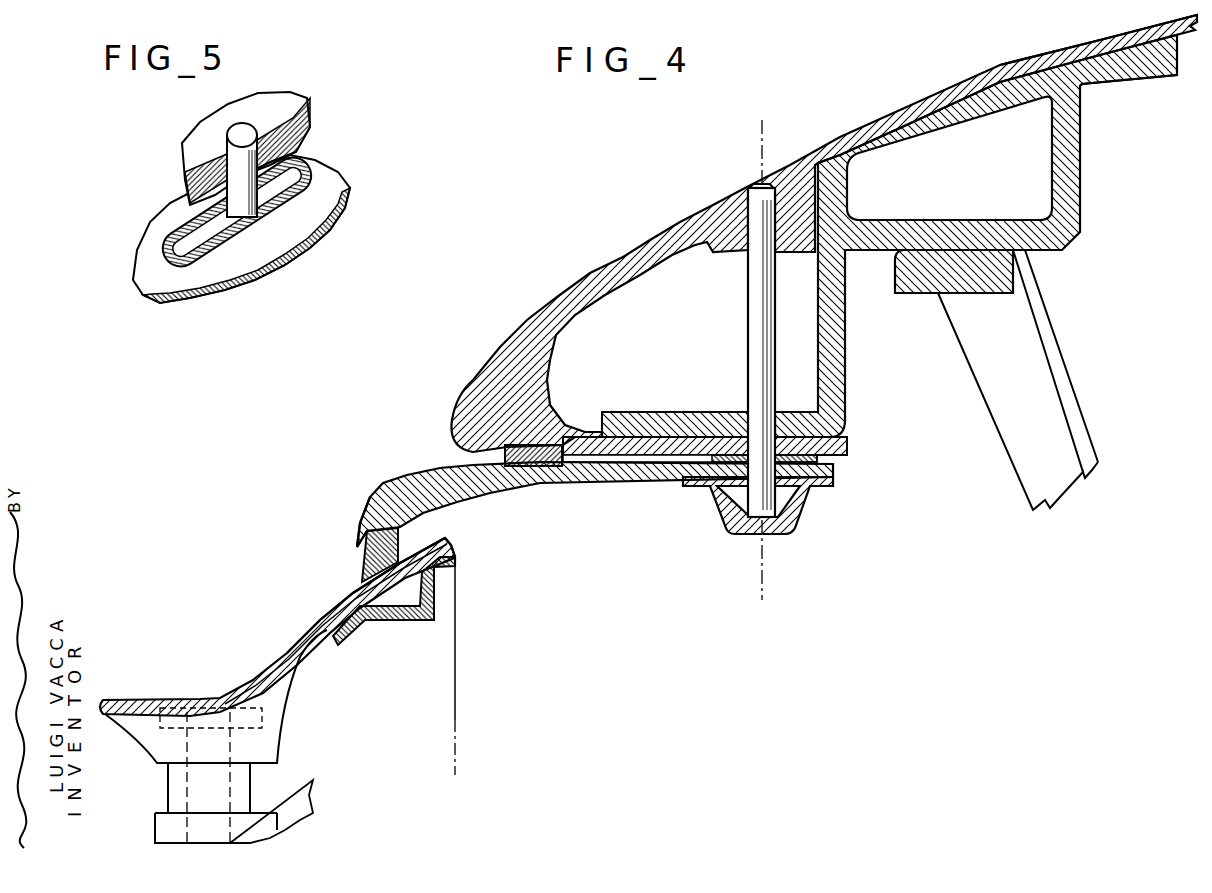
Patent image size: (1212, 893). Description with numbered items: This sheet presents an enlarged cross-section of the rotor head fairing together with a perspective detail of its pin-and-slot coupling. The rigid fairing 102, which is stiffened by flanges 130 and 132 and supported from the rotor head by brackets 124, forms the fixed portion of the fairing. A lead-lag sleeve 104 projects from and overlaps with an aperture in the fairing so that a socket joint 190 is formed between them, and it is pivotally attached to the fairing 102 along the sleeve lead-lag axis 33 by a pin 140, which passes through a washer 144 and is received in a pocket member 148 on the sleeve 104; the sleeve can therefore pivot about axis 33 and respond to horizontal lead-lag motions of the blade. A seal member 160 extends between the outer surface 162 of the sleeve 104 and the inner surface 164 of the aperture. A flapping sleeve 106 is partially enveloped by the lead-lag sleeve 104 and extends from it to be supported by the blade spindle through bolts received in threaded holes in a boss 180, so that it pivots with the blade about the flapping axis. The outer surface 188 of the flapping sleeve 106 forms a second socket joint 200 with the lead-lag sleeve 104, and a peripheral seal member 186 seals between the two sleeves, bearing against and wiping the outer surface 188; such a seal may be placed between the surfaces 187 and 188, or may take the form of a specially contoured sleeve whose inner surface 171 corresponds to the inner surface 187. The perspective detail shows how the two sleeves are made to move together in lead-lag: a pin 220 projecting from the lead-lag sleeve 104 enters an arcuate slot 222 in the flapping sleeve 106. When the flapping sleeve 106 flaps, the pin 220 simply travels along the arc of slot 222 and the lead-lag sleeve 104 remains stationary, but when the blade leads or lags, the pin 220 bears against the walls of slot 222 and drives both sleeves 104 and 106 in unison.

In FIG. 4, the sleeve lead-lag axis 33 is at (762, 147).
In FIG. 4, the rigid fairing 102 is at (610, 257).
In FIG. 5, the lead-lag sleeve 104 is at (280, 103).
In FIG. 4, the lead-lag sleeve 104 is at (390, 480).
In FIG. 5, the flapping sleeve 106 is at (323, 180).
In FIG. 4, the flapping sleeve 106 is at (283, 655).
In FIG. 4, the bracket 124 is at (1030, 357).
In FIG. 4, the flange 130 is at (1103, 77).
In FIG. 4, the flange 132 is at (1123, 67).
In FIG. 4, the pin 140 is at (750, 293).
In FIG. 4, the washer 144 is at (840, 410).
In FIG. 4, the pocket member 148 is at (793, 507).
In FIG. 4, the seal member 160 is at (618, 448).
In FIG. 4, the outer surface of sleeve 162 is at (590, 462).
In FIG. 4, the inner surface of aperture 164 is at (645, 450).
In FIG. 4, the inner surface 171 is at (363, 587).
In FIG. 4, the boss 180 is at (243, 790).
In FIG. 4, the peripheral seal member 186 is at (403, 537).
In FIG. 4, the inner surface 187 is at (357, 550).
In FIG. 4, the outer surface of sleeve 188 is at (313, 633).
In FIG. 4, the socket joint 190 is at (543, 440).
In FIG. 4, the socket joint 200 is at (433, 537).
In FIG. 5, the pin 220 is at (250, 198).
In FIG. 5, the arcuate slot 222 is at (190, 248).